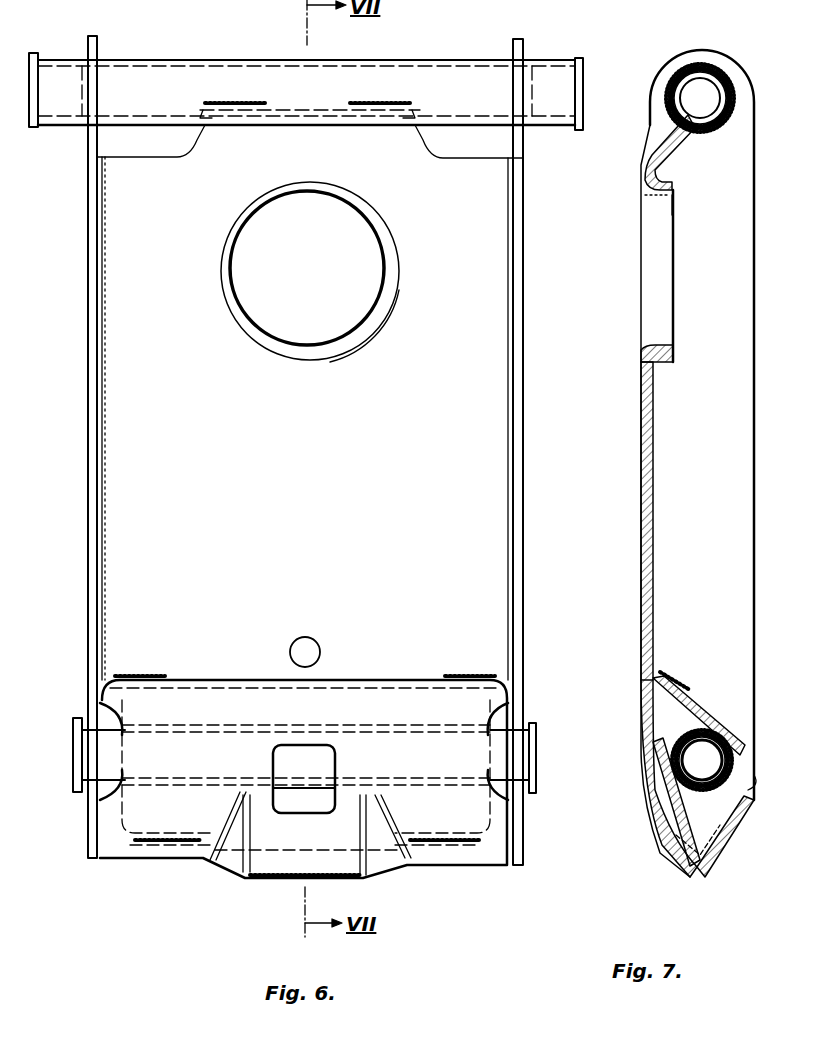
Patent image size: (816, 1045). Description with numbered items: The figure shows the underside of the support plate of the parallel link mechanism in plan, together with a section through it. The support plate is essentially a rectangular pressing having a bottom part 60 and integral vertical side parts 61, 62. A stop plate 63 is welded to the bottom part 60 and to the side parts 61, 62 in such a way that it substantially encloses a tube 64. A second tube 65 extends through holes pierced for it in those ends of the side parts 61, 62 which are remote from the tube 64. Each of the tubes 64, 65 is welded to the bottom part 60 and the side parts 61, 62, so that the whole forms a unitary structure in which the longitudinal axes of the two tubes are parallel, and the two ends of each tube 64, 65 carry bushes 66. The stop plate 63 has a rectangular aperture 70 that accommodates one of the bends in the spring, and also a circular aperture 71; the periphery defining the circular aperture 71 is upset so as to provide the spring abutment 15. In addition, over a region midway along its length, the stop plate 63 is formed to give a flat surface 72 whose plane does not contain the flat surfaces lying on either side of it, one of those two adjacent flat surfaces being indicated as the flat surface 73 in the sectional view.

In FIG. 6, the spring abutment 15 is at (275, 346).
In FIG. 7, the spring abutment 15 is at (674, 192).
In FIG. 6, the bottom part 60 is at (422, 399).
In FIG. 7, the bottom part 60 is at (646, 440).
In FIG. 6, the vertical side part 61 is at (90, 398).
In FIG. 6, the vertical side part 62 is at (522, 298).
In FIG. 7, the vertical side part 62 is at (682, 506).
In FIG. 6, the stop plate 63 is at (398, 697).
In FIG. 7, the stop plate 63 is at (688, 715).
In FIG. 6, the tube 64 is at (285, 755).
In FIG. 7, the tube 64 is at (663, 745).
In FIG. 6, the tube 65 is at (410, 72).
In FIG. 7, the tube 65 is at (700, 66).
In FIG. 6, the bushes 66 is at (40, 60).
In FIG. 6, the rectangular aperture 70 is at (335, 760).
In FIG. 7, the rectangular aperture 70 is at (752, 735).
In FIG. 6, the circular aperture 71 is at (366, 224).
In FIG. 7, the circular aperture 71 is at (672, 342).
In FIG. 7, the flat surface 72 is at (728, 868).
In FIG. 7, the flat surface 73 is at (670, 840).